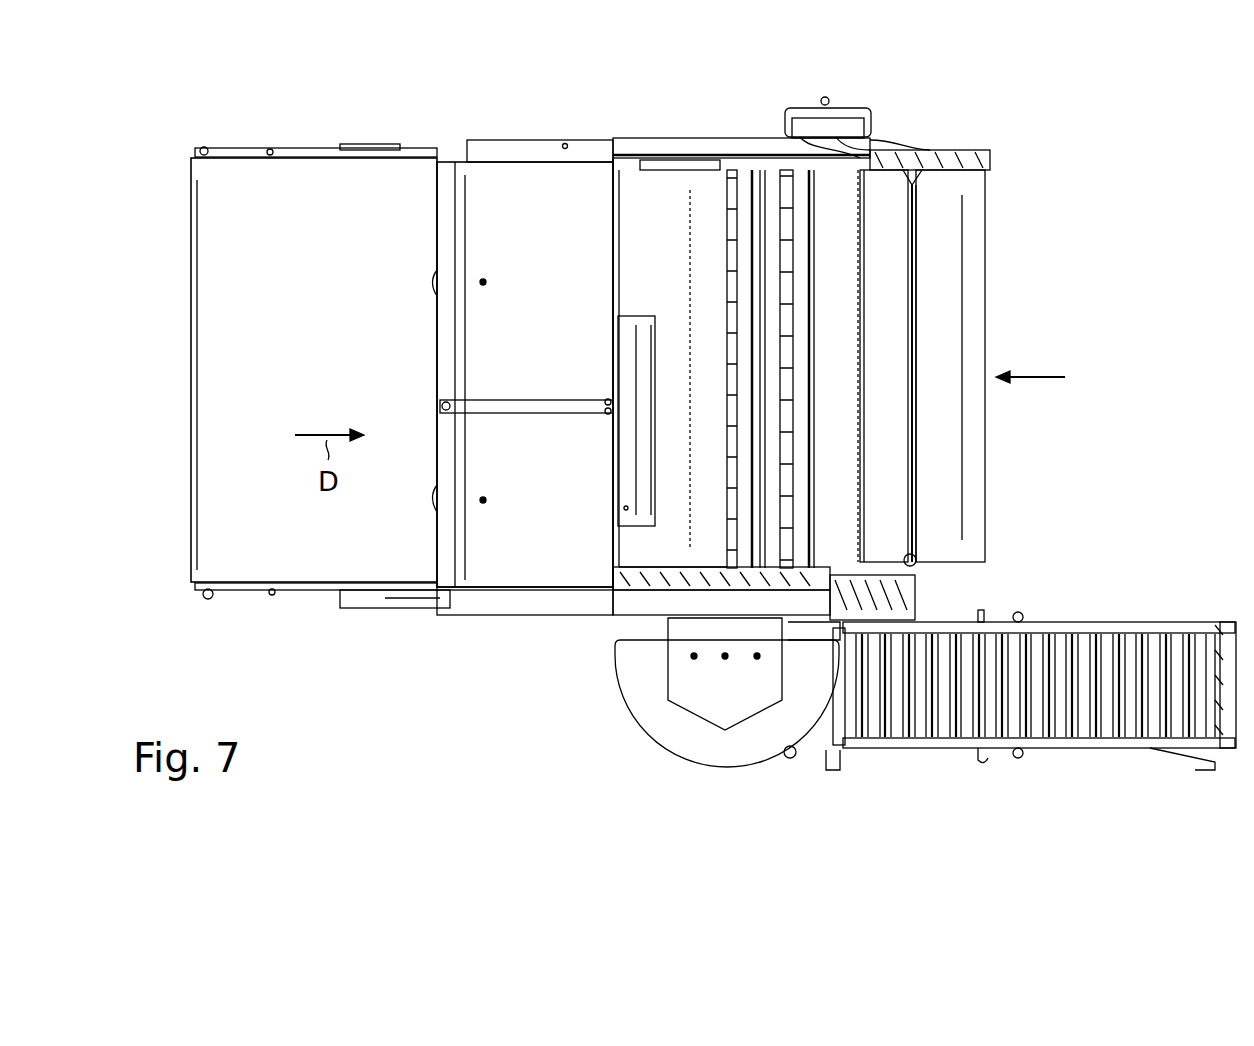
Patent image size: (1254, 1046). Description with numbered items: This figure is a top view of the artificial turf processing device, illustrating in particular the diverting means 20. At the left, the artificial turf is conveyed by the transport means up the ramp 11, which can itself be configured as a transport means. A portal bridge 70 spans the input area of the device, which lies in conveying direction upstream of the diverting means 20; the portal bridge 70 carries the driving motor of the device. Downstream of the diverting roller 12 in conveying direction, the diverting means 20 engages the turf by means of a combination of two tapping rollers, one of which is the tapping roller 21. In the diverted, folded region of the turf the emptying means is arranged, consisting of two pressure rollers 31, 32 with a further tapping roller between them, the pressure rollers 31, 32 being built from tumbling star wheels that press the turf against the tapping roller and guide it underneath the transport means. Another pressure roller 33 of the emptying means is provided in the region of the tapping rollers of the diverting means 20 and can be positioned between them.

The ramp 11 is at (346, 339).
The portal bridge 70 is at (551, 292).
The diverting roller 12 is at (890, 296).
The tapping roller 21 is at (965, 218).
The pressure roller 31 is at (835, 212).
The pressure roller 32 is at (866, 115).
The pressure roller 33 is at (949, 112).
The diverting means 20 is at (1057, 379).